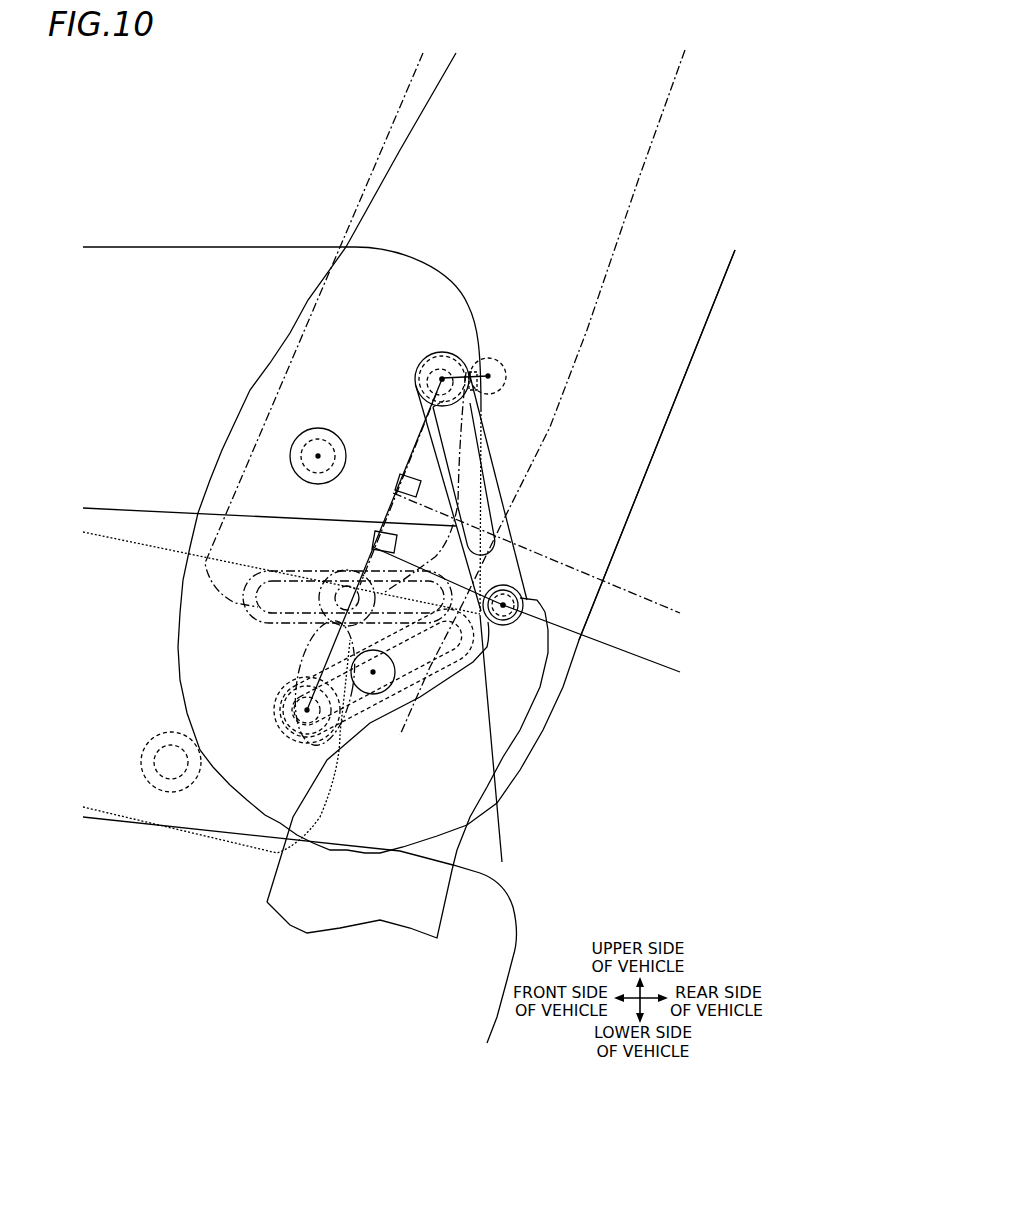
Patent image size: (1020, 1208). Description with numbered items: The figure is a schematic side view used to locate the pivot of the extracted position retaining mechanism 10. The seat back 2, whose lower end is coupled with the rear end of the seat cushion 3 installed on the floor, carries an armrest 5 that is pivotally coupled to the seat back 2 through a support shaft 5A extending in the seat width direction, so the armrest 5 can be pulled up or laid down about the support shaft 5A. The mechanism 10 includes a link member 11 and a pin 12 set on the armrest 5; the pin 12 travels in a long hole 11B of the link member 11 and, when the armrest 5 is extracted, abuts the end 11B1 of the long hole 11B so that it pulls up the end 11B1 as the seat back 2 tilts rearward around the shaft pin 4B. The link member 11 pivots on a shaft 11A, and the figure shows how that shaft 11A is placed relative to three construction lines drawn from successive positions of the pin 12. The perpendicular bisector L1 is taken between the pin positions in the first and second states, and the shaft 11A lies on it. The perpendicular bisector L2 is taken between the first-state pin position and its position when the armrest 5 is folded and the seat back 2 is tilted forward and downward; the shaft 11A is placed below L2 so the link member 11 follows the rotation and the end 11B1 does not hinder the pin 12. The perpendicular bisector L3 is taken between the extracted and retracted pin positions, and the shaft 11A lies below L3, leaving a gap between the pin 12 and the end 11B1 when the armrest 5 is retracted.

The seat back 2 is at (414, 117).
The armrest 5 is at (123, 245).
The support shaft 5A is at (318, 454).
The pin 12 is at (458, 329).
The end of the long hole 11B1 is at (425, 380).
The link member 11 is at (484, 462).
The long hole 11B is at (484, 512).
The shaft of the link member 11A is at (545, 600).
The extracted position retaining mechanism 10 is at (581, 552).
The perpendicular bisector L3 is at (642, 596).
The perpendicular bisector L2 is at (628, 655).
The perpendicular bisector L1 is at (502, 828).
The shaft pin 4B is at (374, 674).
The seat cushion 3 is at (97, 816).